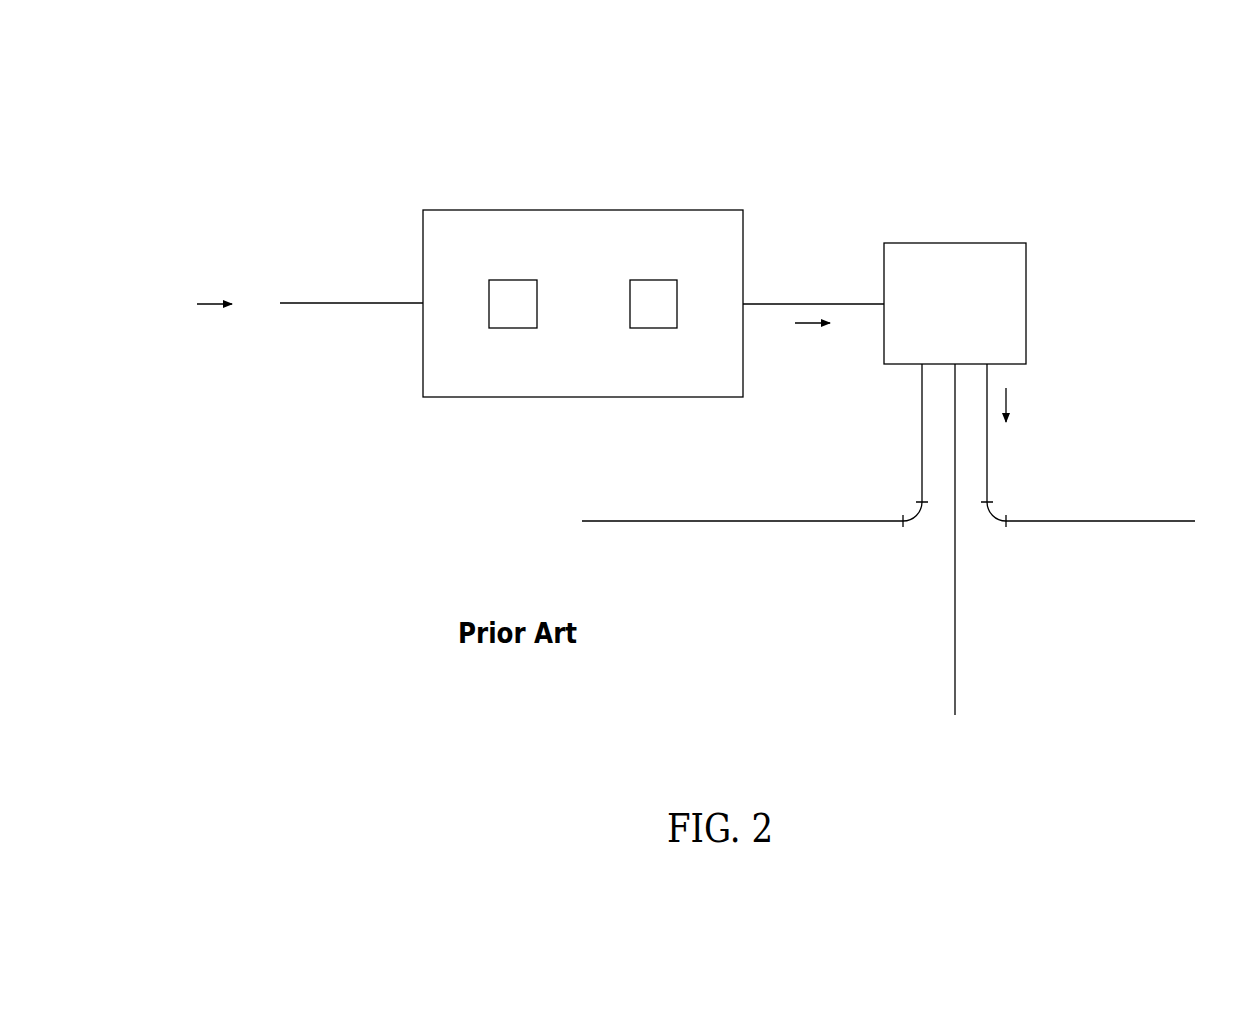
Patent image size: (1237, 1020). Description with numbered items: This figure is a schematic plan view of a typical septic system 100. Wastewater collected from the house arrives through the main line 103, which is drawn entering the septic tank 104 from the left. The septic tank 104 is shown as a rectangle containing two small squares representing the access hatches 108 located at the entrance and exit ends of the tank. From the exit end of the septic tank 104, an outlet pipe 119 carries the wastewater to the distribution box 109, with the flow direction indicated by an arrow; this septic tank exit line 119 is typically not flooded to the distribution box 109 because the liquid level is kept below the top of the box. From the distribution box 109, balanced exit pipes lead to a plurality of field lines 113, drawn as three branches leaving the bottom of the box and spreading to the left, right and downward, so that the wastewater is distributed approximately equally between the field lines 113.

The septic system 100 is at (840, 145).
The main line 103 is at (352, 303).
The septic tank 104 is at (583, 210).
The access hatches 108 is at (662, 300).
The outlet pipe 119 is at (813, 304).
The distribution box 109 is at (975, 243).
The field lines 113 is at (757, 521).